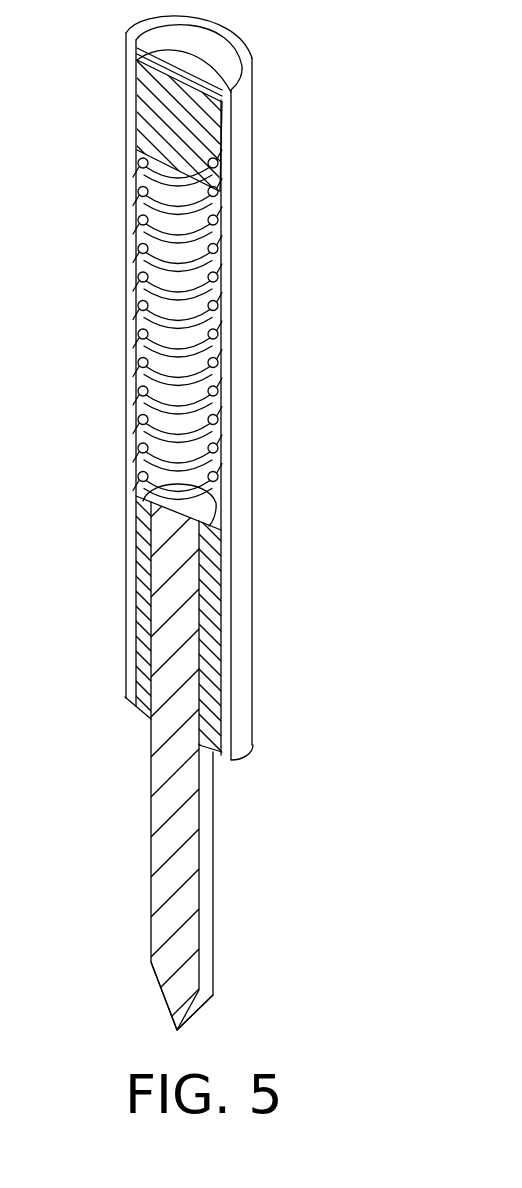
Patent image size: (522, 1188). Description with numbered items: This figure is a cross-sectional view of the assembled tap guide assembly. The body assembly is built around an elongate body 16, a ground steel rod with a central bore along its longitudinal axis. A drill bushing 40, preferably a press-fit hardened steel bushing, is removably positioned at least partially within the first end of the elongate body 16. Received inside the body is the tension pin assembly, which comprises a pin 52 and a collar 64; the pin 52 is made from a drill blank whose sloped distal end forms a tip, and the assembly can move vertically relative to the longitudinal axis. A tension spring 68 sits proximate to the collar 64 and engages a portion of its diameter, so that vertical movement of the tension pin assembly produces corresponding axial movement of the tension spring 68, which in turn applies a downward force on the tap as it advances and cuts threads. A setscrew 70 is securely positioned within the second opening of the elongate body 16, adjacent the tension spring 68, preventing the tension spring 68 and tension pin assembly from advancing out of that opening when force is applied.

The elongate body 16 is at (243, 460).
The setscrew 70 is at (203, 158).
The tension spring 68 is at (212, 303).
The collar 64 is at (212, 550).
The drill bushing 40 is at (212, 708).
The pin 52 is at (182, 913).